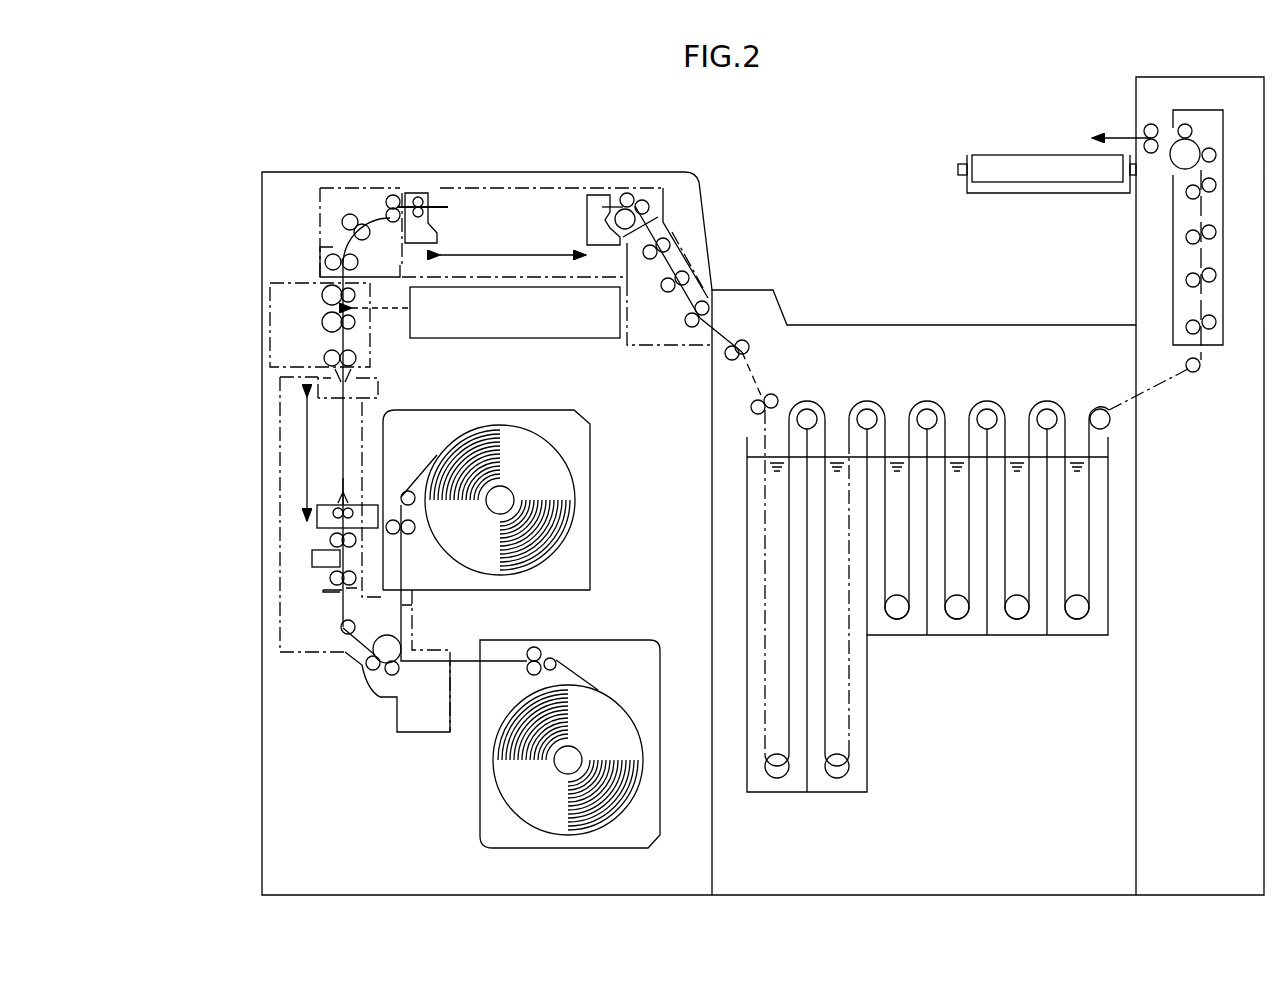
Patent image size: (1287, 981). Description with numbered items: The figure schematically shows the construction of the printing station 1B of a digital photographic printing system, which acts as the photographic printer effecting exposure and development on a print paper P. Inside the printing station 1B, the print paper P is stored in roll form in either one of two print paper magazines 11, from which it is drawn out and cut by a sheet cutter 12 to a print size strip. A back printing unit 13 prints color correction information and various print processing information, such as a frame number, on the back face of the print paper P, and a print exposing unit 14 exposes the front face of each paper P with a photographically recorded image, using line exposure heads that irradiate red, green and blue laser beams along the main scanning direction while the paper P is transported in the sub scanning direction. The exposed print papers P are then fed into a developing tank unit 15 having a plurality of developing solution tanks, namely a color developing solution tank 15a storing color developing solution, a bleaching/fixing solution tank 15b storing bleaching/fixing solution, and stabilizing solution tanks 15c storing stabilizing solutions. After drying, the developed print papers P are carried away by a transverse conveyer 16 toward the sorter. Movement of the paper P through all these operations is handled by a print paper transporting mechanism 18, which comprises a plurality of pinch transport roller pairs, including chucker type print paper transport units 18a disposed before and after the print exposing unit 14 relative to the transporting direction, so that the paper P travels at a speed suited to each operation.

The printing station 1B is at (215, 167).
The print paper magazine 11 is at (588, 548).
The sheet cutter 12 is at (326, 590).
The back printing unit 13 is at (311, 558).
The print exposing unit 14 is at (547, 333).
The developing tank unit 15 is at (928, 635).
The color developing solution tank 15a is at (783, 790).
The bleaching/fixing solution tank 15b is at (855, 782).
The stabilizing solution tanks 15c is at (1077, 630).
The transverse conveyer 16 is at (1008, 158).
The print paper transporting mechanism 18 is at (338, 220).
The chucker type print paper transport unit 18a is at (541, 186).
The print paper P is at (320, 258).